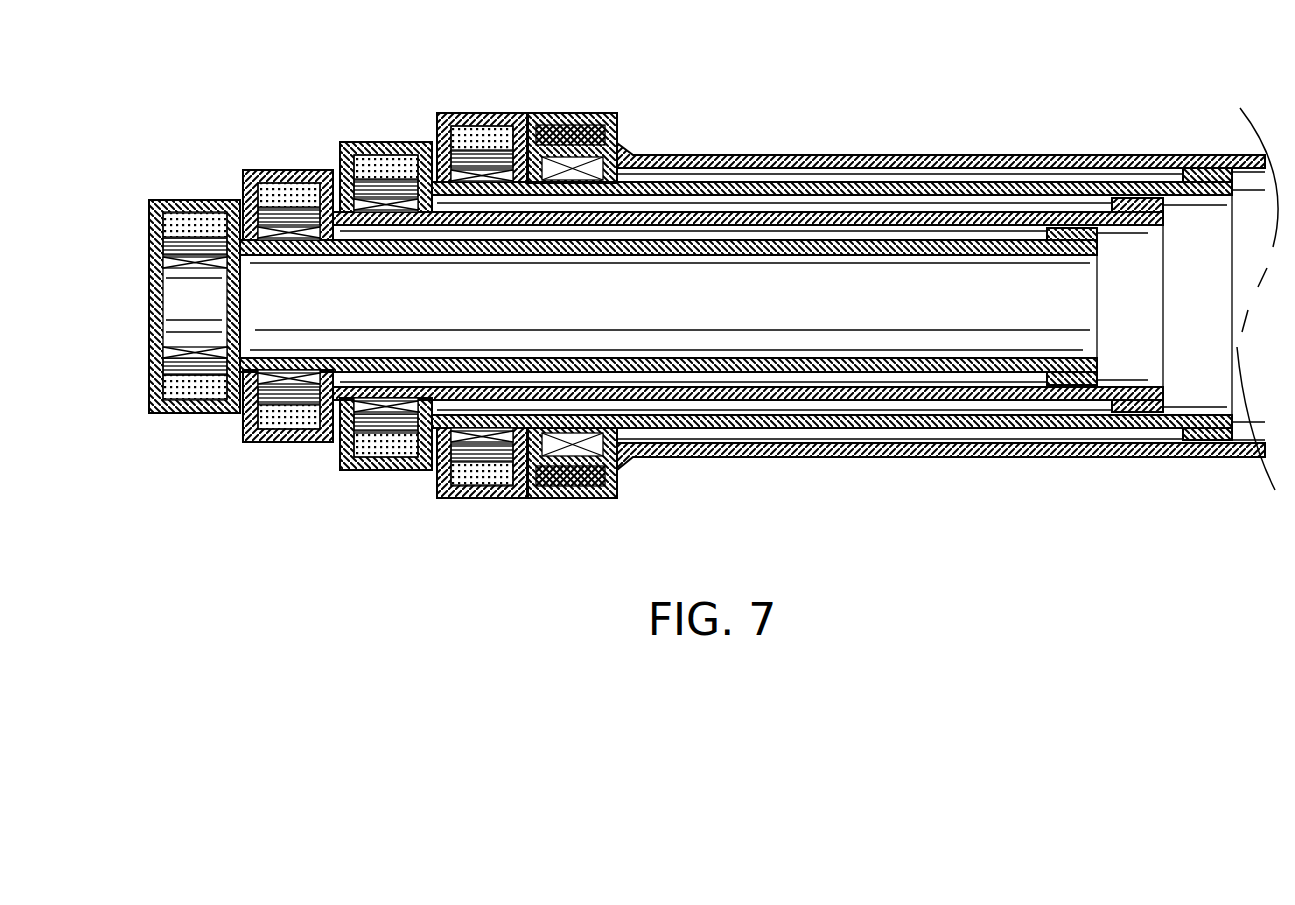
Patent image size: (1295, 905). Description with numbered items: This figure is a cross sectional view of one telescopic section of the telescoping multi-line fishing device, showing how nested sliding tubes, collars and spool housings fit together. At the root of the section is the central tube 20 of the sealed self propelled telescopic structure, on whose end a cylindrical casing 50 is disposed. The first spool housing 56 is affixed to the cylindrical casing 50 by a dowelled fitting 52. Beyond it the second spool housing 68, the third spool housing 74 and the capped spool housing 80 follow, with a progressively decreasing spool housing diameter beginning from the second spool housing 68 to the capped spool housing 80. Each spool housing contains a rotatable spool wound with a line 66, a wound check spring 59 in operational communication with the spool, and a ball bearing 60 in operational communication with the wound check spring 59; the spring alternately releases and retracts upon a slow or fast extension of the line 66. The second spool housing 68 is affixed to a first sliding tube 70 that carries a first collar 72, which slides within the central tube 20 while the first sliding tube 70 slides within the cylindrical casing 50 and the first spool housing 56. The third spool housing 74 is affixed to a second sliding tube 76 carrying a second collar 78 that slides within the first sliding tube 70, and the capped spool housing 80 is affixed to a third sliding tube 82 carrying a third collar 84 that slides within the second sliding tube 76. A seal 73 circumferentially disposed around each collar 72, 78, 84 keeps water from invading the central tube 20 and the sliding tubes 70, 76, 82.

The central tube 20 is at (759, 293).
The cylindrical casing 50 is at (580, 165).
The dowelled fitting 52 is at (553, 116).
The first spool housing 56 is at (497, 116).
The wound check spring 59 is at (180, 385).
The ball bearing 60 is at (490, 170).
The line 66 is at (175, 218).
The second spool housing 68 is at (385, 146).
The first sliding tube 70 is at (833, 158).
The first collar 72 is at (1210, 168).
The seal 73 is at (1085, 388).
The third spool housing 74 is at (292, 176).
The second sliding tube 76 is at (917, 227).
The second collar 78 is at (1130, 198).
The capped spool housing 80 is at (183, 206).
The third sliding tube 82 is at (970, 255).
The third collar 84 is at (1065, 228).